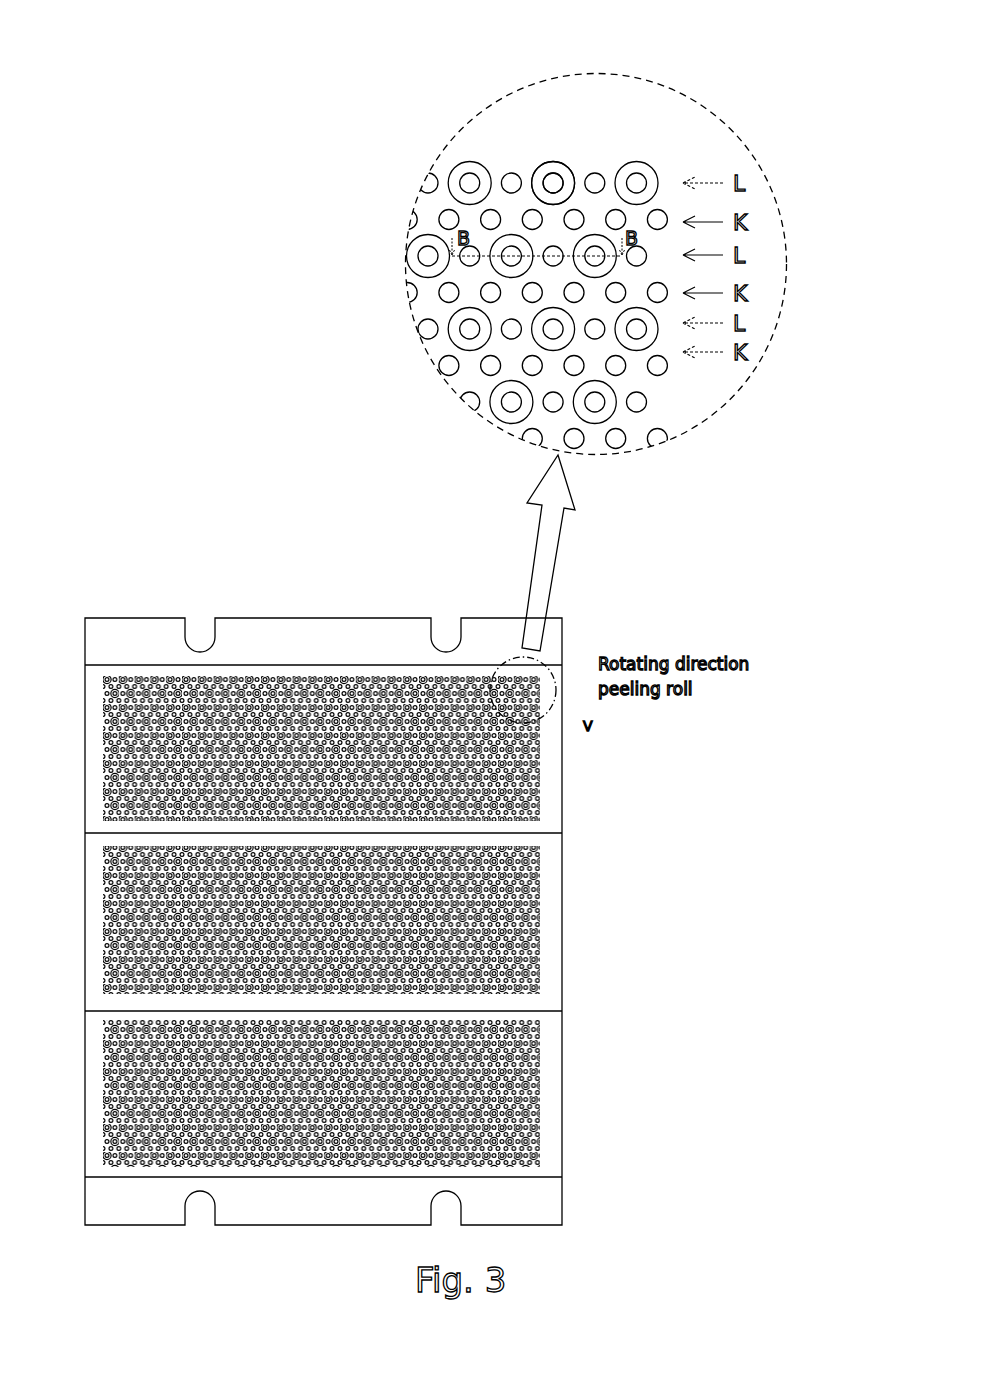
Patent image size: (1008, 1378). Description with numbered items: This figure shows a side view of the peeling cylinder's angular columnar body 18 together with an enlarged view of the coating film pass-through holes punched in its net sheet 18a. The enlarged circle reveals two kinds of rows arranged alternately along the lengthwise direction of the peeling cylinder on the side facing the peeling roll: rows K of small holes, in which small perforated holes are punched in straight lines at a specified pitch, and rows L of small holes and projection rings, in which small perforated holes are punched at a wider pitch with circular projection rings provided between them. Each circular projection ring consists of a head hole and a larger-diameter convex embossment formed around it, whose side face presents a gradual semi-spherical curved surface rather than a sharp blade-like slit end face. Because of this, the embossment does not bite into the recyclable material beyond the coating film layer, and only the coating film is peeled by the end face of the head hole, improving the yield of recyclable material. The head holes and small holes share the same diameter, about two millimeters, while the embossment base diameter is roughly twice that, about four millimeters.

The angular columnar body 18 is at (607, 634).
The net sheet 18a is at (555, 758).